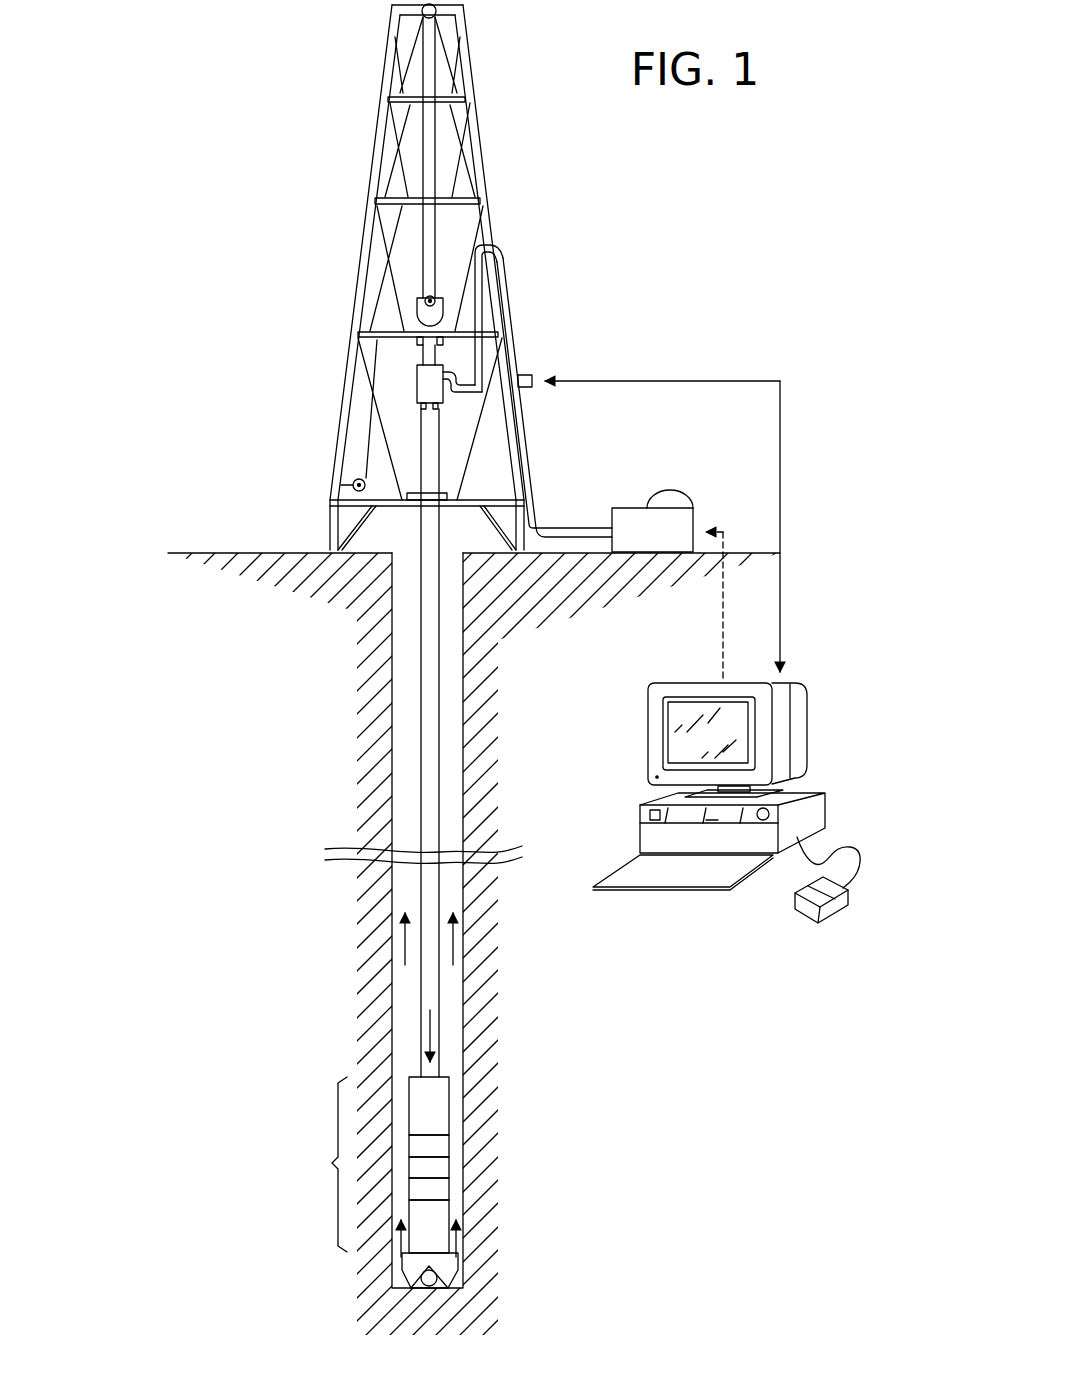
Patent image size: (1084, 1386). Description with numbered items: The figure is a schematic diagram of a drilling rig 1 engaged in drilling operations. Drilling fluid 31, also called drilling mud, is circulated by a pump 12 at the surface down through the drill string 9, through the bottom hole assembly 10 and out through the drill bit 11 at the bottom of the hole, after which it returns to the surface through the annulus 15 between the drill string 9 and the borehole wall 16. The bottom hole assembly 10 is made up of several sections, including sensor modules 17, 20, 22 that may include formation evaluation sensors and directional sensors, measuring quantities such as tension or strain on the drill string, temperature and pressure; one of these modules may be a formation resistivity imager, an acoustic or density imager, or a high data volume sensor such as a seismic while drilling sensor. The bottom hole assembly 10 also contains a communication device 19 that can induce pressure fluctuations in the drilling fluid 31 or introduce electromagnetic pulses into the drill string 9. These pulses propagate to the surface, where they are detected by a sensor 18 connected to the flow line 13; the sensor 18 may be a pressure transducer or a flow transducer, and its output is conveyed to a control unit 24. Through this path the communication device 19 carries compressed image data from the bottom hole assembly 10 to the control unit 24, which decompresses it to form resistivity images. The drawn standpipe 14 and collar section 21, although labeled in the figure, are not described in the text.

The drilling rig 1 is at (371, 176).
The drill string 9 is at (420, 708).
The bottom hole assembly 10 is at (318, 1164).
The drill bit 11 is at (405, 1257).
The pump 12 is at (677, 505).
The flow line 13 is at (537, 495).
The standpipe / hose 14 is at (478, 368).
The annulus 15 is at (448, 777).
The borehole wall 16 is at (464, 684).
The sensor module 17 is at (450, 1168).
The sensor 18 is at (533, 386).
The communication device 19 is at (450, 1140).
The sensor module 20 is at (450, 1187).
The drill collar 21 is at (450, 1097).
The sensor module 22 is at (447, 1229).
The control unit 24 is at (826, 665).
The drilling fluid 31 is at (400, 1012).